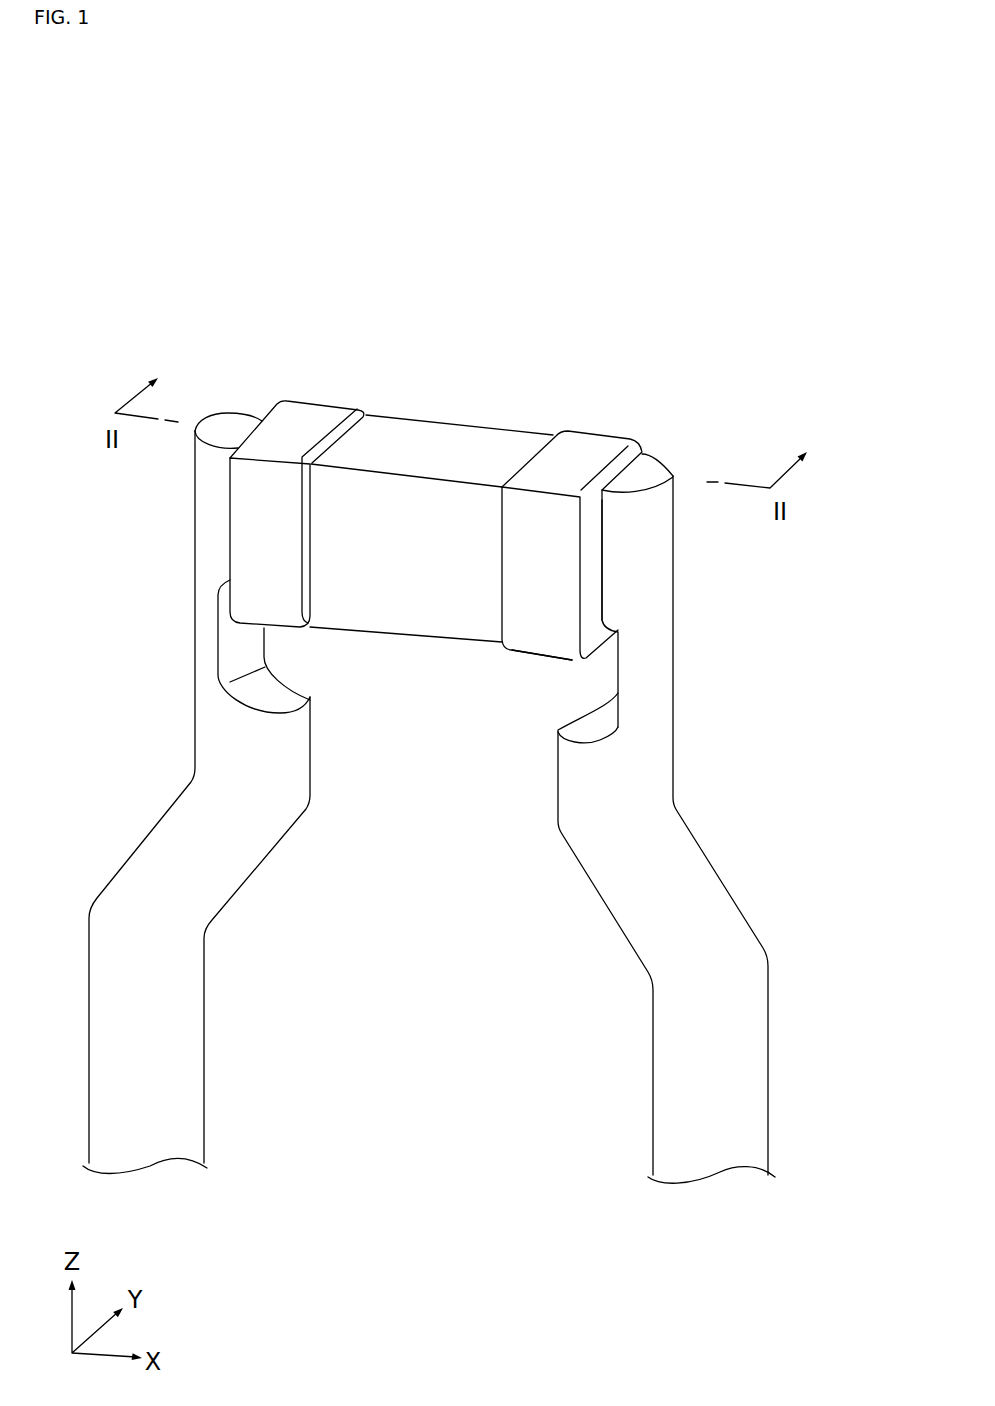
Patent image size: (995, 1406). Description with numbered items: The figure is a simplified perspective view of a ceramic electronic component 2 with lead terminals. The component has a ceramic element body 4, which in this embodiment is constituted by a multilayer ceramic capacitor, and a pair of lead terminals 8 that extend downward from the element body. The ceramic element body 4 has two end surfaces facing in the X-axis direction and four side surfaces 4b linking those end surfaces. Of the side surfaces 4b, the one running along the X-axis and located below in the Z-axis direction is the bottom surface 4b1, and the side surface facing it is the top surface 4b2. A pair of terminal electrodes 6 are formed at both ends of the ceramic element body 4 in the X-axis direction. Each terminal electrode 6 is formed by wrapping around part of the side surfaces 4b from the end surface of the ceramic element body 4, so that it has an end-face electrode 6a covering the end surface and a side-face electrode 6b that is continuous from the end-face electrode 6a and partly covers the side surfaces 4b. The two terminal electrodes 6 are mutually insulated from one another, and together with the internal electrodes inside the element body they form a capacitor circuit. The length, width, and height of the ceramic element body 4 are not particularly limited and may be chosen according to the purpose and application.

The ceramic electronic component 2 is at (682, 318).
The ceramic element body 4 is at (419, 410).
The side surfaces 4b is at (365, 580).
The bottom surface 4b1 is at (420, 640).
The top surface 4b2 is at (474, 440).
The terminal electrodes 6 is at (335, 395).
The end-face electrode 6a is at (596, 554).
The side-face electrode 6b is at (533, 633).
The lead terminals 8 is at (190, 712).